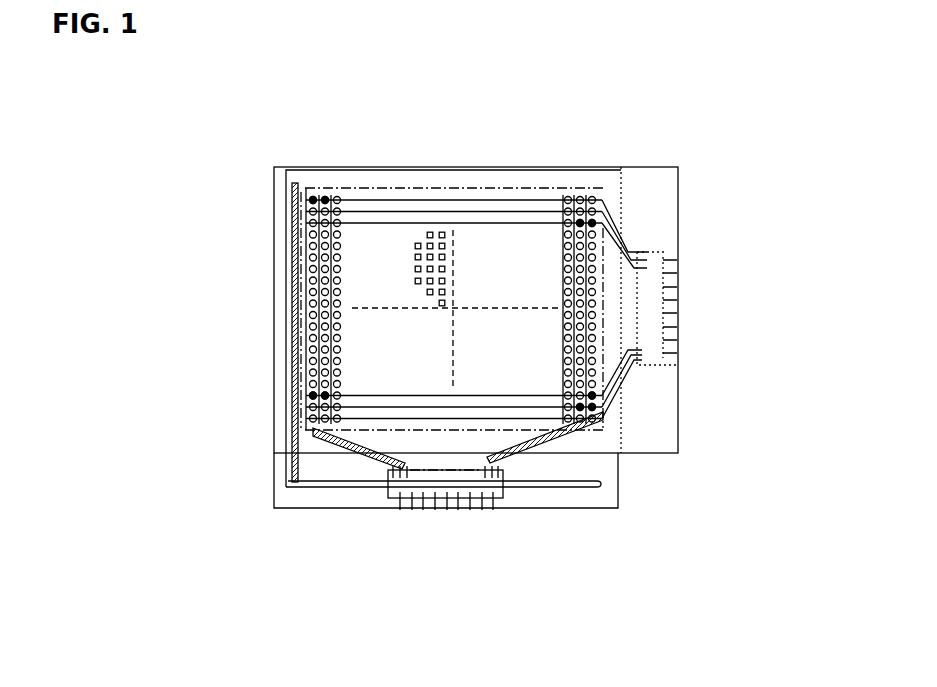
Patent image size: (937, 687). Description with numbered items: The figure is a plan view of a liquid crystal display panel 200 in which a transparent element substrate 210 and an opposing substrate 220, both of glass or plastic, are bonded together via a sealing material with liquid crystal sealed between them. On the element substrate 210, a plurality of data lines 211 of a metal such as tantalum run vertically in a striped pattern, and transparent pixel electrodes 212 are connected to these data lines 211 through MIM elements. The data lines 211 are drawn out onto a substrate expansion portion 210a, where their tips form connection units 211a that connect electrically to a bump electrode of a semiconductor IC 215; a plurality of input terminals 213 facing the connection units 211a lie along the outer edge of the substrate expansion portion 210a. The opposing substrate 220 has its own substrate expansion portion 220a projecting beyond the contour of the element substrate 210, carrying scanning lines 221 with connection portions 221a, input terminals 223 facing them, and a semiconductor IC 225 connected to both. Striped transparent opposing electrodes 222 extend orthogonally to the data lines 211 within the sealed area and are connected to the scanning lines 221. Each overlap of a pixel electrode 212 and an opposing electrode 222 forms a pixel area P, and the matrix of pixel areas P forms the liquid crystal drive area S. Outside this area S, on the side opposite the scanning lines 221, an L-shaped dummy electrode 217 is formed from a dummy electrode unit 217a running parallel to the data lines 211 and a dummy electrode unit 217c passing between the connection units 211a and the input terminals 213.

The liquid crystal display panel 200 is at (263, 88).
The element substrate 210 is at (274, 428).
The substrate expansion portion 210a is at (562, 503).
The data lines 211 is at (310, 312).
The connection units 211a is at (367, 510).
The pixel electrodes 212 is at (310, 243).
The input terminals 213 is at (438, 510).
The semiconductor IC 215 is at (515, 507).
The dummy electrode 217 is at (290, 464).
The dummy electrode unit 217a is at (293, 367).
The dummy electrode unit 217c is at (408, 510).
The opposing substrate 220 is at (536, 165).
The substrate expansion portion 220a is at (652, 175).
The scanning lines 221 is at (622, 378).
The connection portion 221a is at (642, 363).
The opposing electrodes 222 is at (423, 190).
The input terminals 223 is at (677, 290).
The semiconductor IC 225 is at (667, 252).
The liquid crystal drive area S is at (370, 188).
The pixel area P is at (418, 247).